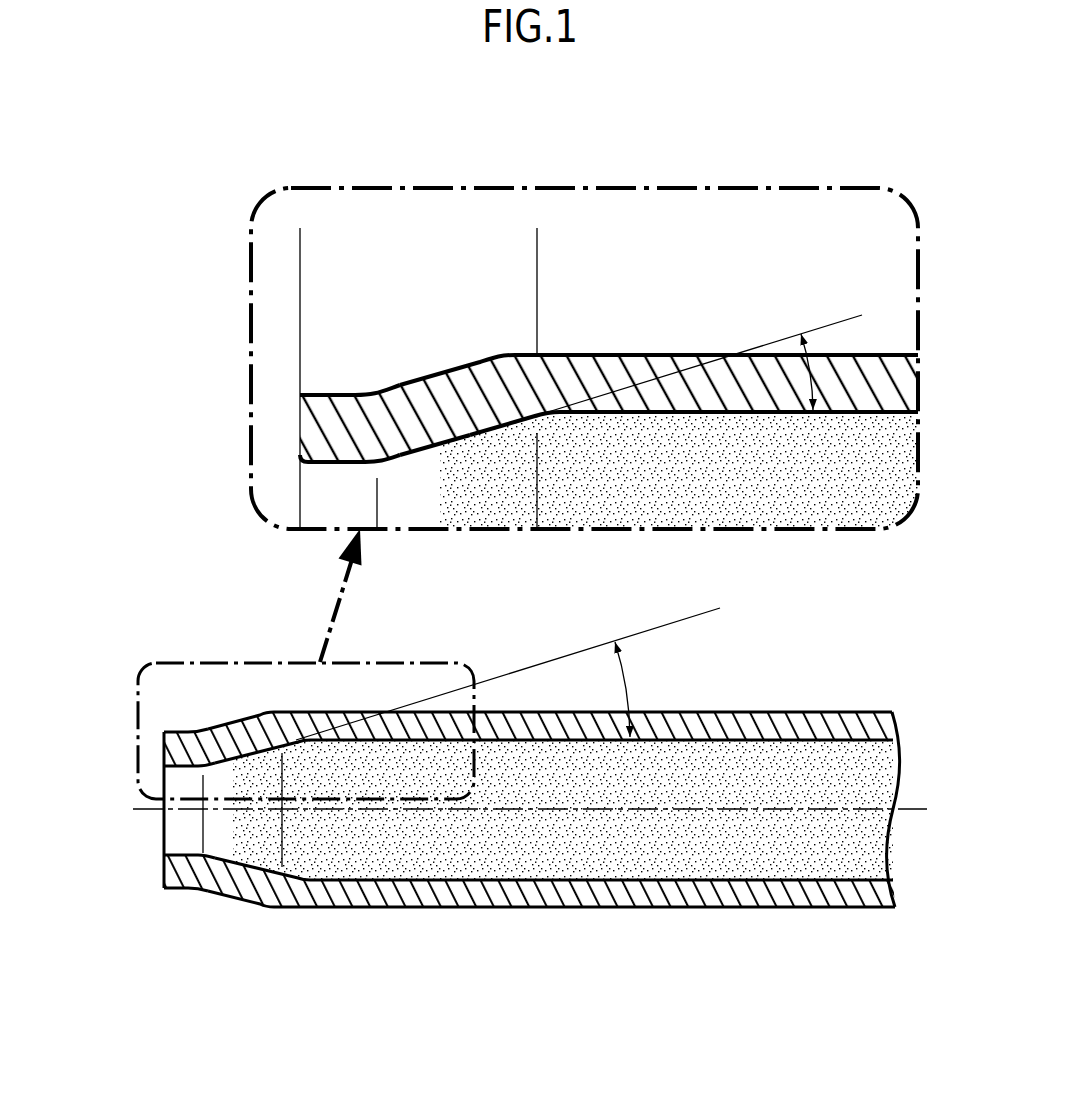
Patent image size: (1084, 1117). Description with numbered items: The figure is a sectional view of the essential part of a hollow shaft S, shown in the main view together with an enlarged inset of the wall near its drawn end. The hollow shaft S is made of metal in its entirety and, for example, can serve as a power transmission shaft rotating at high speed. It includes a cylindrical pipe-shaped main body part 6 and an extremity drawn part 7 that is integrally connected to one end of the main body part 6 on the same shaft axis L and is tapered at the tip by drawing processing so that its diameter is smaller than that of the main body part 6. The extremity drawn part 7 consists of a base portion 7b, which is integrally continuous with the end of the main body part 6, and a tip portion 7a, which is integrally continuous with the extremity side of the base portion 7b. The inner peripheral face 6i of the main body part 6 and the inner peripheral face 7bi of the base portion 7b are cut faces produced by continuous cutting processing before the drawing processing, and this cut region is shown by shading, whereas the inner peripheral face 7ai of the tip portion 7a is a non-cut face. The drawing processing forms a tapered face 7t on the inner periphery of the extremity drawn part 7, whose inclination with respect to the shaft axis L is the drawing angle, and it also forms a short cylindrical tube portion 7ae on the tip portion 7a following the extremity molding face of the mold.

The hollow shaft S is at (495, 659).
The extremity drawn part 7 is at (342, 640).
The tip portion 7a is at (266, 624).
The base portion 7b is at (410, 640).
The short cylindrical tube portion 7ae is at (300, 336).
The inner peripheral face of tip portion 7ai is at (333, 465).
The tapered face 7t is at (431, 444).
The inner peripheral face of base portion 7bi is at (498, 414).
The main body part 6 is at (596, 640).
The inner peripheral face of main body part 6i is at (742, 413).
The shaft axis L is at (765, 810).